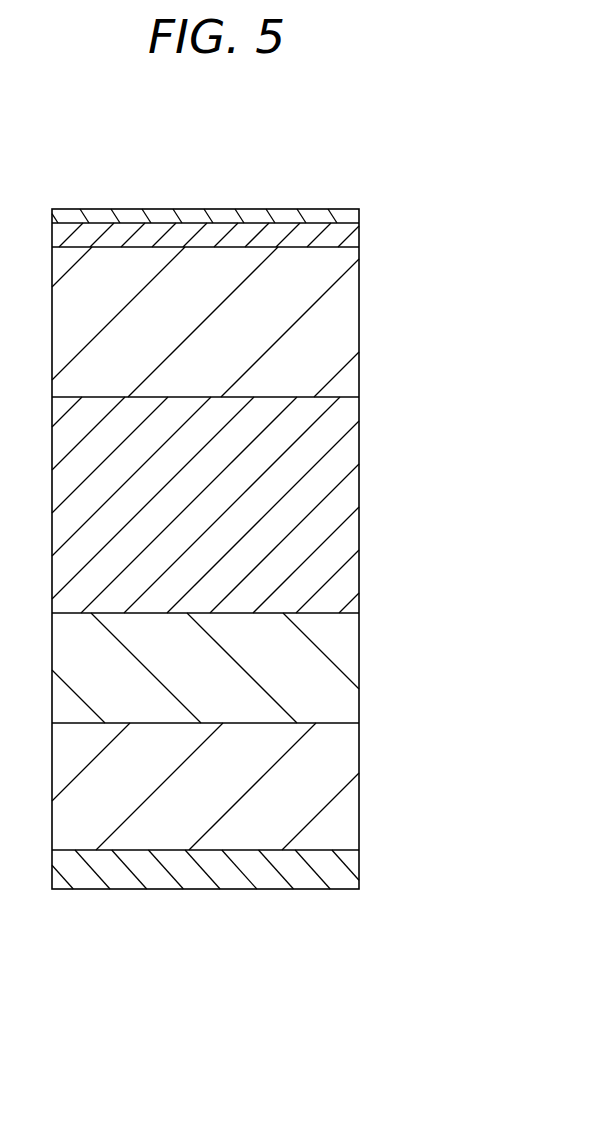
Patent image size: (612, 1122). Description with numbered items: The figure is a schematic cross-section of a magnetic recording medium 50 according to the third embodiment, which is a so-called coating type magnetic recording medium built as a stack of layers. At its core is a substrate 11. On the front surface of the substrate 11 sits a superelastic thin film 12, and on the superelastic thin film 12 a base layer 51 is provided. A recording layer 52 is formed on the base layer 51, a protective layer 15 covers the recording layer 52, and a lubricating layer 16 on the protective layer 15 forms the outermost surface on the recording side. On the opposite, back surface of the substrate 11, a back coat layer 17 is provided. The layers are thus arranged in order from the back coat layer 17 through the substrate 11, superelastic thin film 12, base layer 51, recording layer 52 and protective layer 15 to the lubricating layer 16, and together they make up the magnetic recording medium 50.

The magnetic recording medium 50 is at (246, 514).
The lubricating layer 16 is at (360, 217).
The protective layer 15 is at (353, 240).
The recording layer 52 is at (357, 322).
The base layer 51 is at (357, 504).
The superelastic thin film 12 is at (356, 668).
The substrate 11 is at (357, 789).
The back coat layer 17 is at (357, 869).